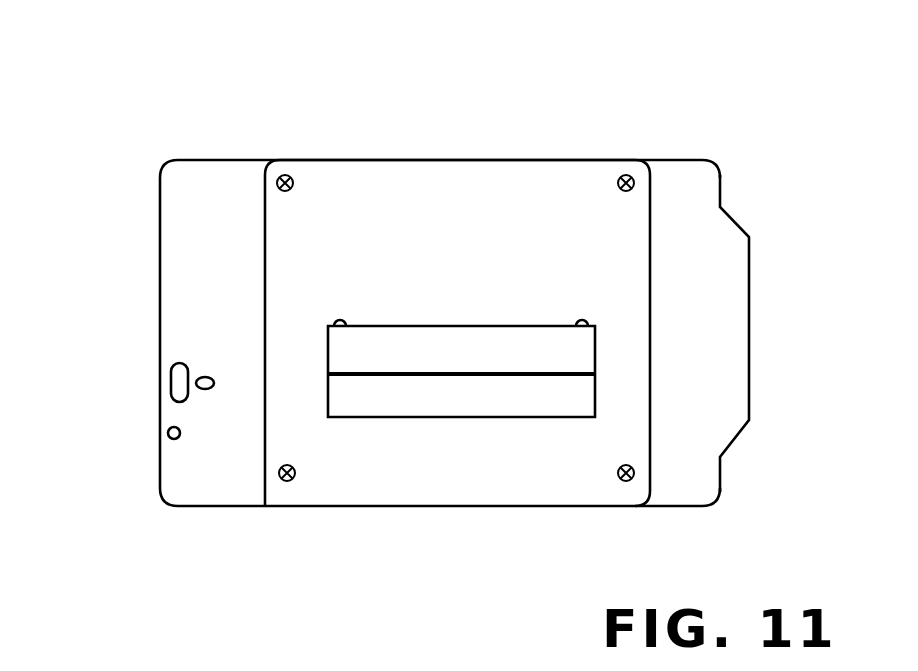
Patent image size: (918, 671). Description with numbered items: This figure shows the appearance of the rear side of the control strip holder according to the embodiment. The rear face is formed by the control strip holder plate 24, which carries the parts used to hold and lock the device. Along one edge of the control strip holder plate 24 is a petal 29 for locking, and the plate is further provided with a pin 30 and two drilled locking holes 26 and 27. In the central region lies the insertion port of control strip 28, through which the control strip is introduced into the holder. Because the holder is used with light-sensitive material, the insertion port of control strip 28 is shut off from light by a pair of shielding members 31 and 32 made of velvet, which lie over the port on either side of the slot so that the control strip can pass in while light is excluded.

The control strip holder plate 24 is at (230, 160).
The locking hole 26 is at (177, 383).
The locking hole 27 is at (200, 378).
The insertion port of control strip 28 is at (368, 376).
The petal for locking 29 is at (735, 409).
The pin 30 is at (167, 433).
The shielding member 31 is at (477, 343).
The shielding member 32 is at (503, 407).